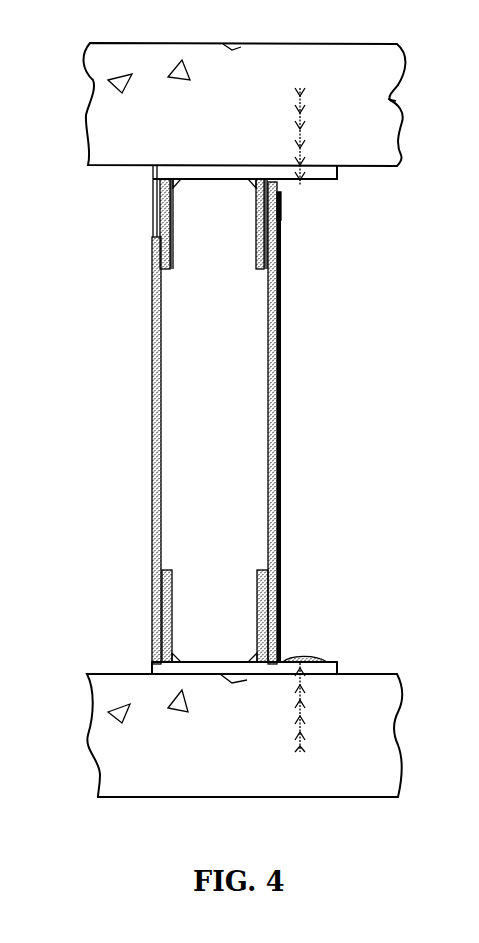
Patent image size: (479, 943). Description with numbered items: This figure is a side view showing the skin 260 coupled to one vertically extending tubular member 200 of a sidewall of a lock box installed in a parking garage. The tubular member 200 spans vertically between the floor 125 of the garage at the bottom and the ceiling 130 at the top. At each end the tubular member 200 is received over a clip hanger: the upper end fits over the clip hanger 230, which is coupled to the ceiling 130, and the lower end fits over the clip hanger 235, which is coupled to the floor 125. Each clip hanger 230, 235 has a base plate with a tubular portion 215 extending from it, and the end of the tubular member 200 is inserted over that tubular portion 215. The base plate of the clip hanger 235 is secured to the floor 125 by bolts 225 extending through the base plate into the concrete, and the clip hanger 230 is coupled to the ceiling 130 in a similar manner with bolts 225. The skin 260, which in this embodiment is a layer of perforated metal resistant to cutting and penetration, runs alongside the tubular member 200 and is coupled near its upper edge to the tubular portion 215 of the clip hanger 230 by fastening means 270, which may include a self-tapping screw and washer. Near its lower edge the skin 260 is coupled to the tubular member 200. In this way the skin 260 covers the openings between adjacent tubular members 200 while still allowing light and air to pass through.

The floor 125 is at (249, 782).
The ceiling 130 is at (250, 150).
The tubular member 200 is at (273, 422).
The tubular portion 215 is at (180, 263).
The bolts 225 is at (306, 126).
The clip hanger 230 is at (144, 223).
The clip hanger 235 is at (186, 586).
The skin 260 is at (282, 365).
The fastening means 270 is at (297, 210).